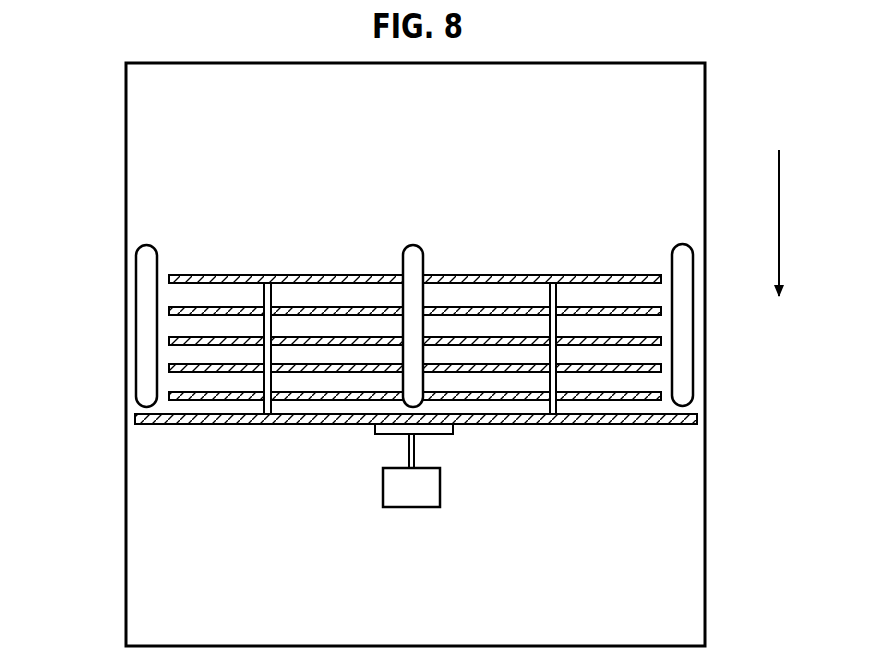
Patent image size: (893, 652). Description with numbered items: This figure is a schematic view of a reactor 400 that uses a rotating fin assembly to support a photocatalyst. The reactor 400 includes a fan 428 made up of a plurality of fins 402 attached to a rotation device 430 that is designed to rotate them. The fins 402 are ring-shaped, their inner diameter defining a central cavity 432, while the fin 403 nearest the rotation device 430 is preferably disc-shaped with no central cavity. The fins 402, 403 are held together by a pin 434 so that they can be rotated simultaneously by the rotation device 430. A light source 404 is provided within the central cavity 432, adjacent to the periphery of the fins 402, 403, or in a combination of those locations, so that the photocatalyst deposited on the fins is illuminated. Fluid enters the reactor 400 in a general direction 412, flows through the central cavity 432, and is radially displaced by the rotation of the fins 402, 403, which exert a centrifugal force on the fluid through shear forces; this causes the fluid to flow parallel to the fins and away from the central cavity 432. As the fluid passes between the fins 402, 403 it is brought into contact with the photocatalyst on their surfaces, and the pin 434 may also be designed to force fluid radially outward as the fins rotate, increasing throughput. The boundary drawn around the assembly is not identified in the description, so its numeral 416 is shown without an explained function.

The reactor 400 is at (83, 152).
The fins 402 is at (658, 312).
The fin 403 is at (697, 418).
The light source 404 is at (418, 250).
The general direction 412 is at (779, 235).
The chamber housing 416 is at (655, 67).
The fan 428 is at (583, 432).
The rotation device 430 is at (383, 485).
The central cavity 432 is at (388, 305).
The pin 434 is at (265, 292).